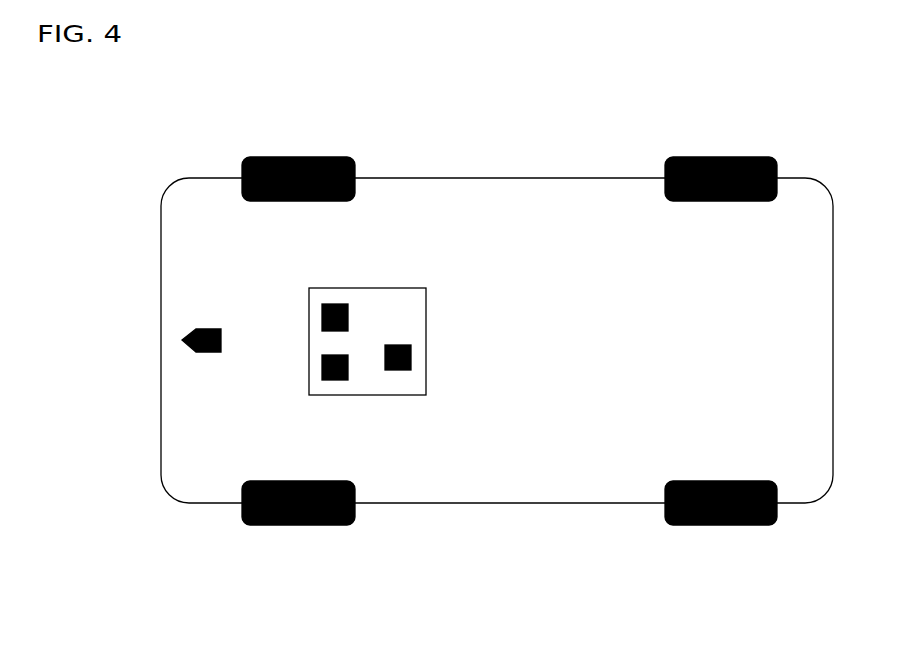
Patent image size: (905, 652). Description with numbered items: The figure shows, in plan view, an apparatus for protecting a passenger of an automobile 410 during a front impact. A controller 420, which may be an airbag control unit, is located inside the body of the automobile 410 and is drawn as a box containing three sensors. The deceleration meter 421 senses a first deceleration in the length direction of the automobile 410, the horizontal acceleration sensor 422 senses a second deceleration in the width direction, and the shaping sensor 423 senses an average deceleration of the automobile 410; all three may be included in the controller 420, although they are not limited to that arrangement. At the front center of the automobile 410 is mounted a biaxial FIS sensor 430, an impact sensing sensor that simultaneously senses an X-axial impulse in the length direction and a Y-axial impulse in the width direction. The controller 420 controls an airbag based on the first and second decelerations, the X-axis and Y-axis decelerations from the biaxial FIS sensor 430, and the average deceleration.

The automobile 410 is at (510, 178).
The controller 420 is at (390, 395).
The deceleration meter 421 is at (336, 300).
The horizontal acceleration sensor 422 is at (411, 356).
The shaping sensor 423 is at (335, 380).
The biaxial FIS sensor 430 is at (182, 340).